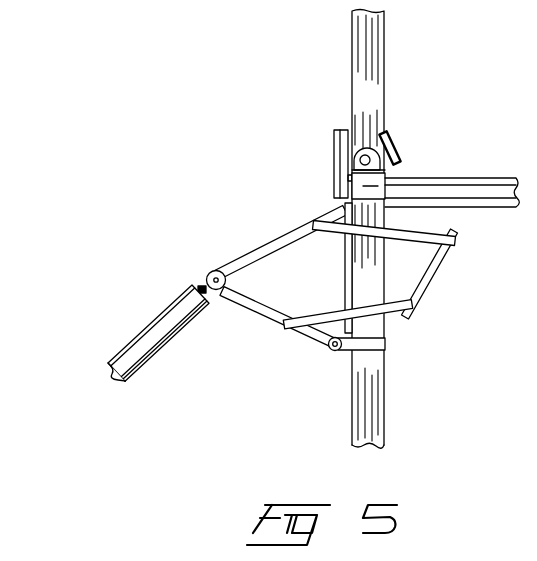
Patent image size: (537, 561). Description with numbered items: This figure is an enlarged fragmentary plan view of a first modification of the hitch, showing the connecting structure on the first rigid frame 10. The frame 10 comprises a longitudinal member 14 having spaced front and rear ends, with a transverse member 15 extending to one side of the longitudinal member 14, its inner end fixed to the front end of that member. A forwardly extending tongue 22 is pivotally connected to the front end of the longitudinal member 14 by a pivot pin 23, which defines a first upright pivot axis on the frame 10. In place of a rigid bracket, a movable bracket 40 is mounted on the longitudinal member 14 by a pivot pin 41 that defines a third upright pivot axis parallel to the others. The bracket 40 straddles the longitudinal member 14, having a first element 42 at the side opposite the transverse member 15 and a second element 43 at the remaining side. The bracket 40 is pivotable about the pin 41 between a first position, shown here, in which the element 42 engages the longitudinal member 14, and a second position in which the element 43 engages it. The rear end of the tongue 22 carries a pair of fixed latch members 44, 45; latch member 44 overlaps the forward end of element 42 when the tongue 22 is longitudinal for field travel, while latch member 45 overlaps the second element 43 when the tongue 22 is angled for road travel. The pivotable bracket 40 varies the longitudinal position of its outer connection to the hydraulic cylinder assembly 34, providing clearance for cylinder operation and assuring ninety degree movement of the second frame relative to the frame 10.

The first rigid frame 10 is at (350, 42).
The longitudinal member 14 is at (380, 401).
The transverse member 15 is at (446, 178).
The tongue 22 is at (385, 69).
The pivot pin 23 is at (383, 133).
The hydraulic cylinder assembly 34 is at (172, 342).
The bracket 40 is at (343, 289).
The pivot pin 41 is at (332, 352).
The first element 42 is at (345, 272).
The second element 43 is at (438, 275).
The latch member 44 is at (334, 162).
The latch member 45 is at (398, 152).